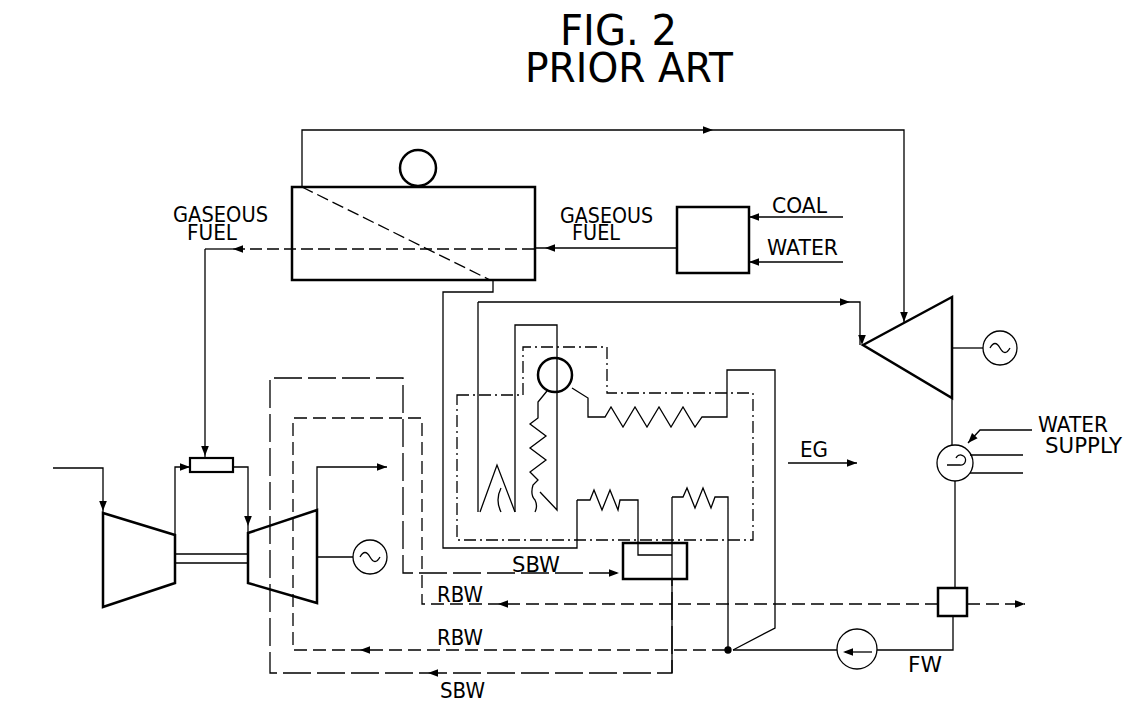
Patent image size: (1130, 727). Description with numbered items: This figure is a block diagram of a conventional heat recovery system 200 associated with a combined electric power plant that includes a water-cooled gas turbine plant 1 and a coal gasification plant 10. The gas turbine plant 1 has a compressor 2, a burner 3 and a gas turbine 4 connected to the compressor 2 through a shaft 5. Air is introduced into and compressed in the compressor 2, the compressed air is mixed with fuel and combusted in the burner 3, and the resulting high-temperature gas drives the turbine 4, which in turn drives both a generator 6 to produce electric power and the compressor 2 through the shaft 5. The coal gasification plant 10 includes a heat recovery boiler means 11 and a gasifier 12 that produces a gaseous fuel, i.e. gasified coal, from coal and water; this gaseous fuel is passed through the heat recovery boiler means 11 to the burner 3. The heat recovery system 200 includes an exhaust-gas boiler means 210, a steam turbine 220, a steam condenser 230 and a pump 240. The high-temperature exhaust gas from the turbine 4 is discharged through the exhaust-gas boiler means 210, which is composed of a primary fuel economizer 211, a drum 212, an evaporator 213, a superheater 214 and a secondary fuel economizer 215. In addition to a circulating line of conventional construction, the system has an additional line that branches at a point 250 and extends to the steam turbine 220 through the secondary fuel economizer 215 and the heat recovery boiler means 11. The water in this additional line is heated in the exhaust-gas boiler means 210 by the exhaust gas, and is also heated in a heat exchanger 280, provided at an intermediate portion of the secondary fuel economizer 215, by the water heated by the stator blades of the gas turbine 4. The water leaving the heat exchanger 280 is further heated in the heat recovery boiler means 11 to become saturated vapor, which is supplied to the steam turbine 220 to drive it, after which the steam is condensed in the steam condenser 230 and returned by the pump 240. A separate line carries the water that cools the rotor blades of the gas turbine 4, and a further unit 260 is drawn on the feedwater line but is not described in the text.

The water-cooled gas turbine plant 1 is at (220, 561).
The compressor 2 is at (133, 590).
The burner 3 is at (209, 473).
The gas turbine 4 is at (262, 580).
The shaft 5 is at (205, 583).
The generator 6 is at (365, 577).
The coal gasification plant 10 is at (597, 172).
The heat recovery boiler means 11 is at (503, 187).
The gasifier 12 is at (733, 207).
The heat recovery system 200 is at (838, 318).
The exhaust-gas boiler means 210 is at (637, 388).
The primary fuel economizer 211 is at (630, 423).
The drum 212 is at (568, 360).
The evaporator 213 is at (552, 467).
The superheater 214 is at (489, 504).
The secondary fuel economizer 215 is at (677, 497).
The steam turbine 220 is at (885, 362).
The steam condenser 230 is at (965, 481).
The pump 240 is at (862, 668).
The branch point 250 is at (729, 653).
The deaerator 260 is at (968, 588).
The heat exchanger 280 is at (623, 580).